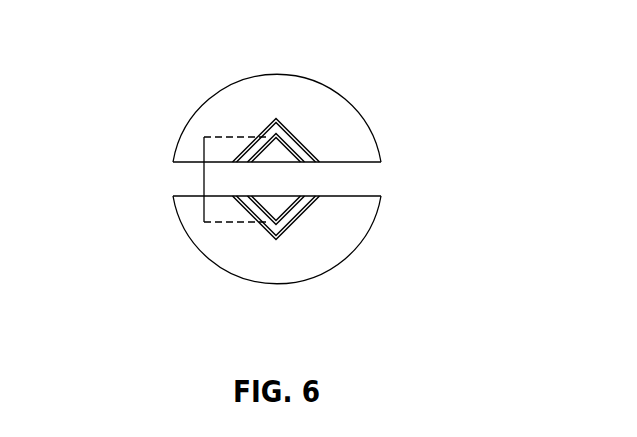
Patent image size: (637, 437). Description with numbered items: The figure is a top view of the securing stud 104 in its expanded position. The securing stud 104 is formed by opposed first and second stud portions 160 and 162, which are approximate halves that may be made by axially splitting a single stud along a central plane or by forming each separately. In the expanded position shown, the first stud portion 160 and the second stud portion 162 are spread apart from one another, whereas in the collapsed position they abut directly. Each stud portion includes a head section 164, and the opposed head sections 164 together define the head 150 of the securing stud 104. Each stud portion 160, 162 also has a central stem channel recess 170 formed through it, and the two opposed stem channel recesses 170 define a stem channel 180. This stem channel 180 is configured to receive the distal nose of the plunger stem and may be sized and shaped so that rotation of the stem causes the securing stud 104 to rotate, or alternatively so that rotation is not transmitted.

The securing stud 104 is at (157, 44).
The head 150 is at (152, 73).
The first stud portion 160 is at (217, 272).
The second stud portion 162 is at (300, 73).
The head section 164 is at (227, 83).
The stem channel recess 170 is at (258, 155).
The stem channel 180 is at (204, 137).